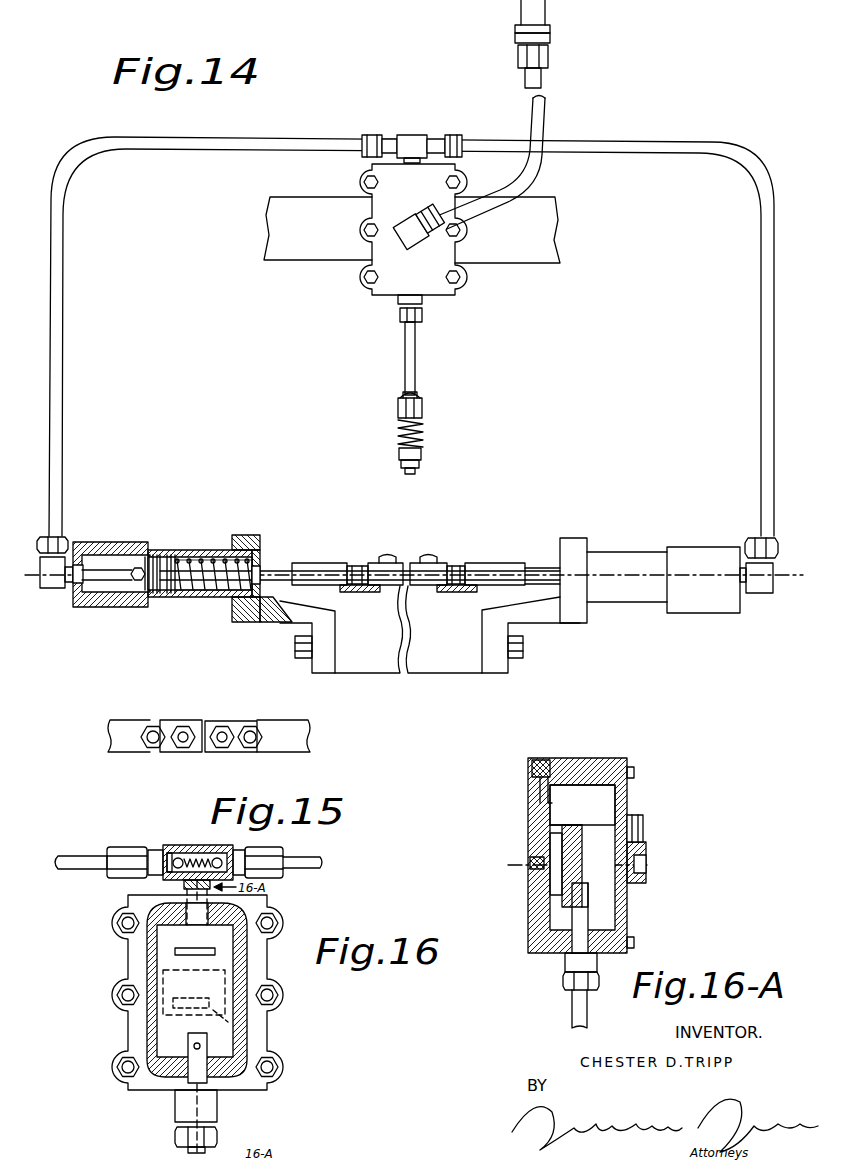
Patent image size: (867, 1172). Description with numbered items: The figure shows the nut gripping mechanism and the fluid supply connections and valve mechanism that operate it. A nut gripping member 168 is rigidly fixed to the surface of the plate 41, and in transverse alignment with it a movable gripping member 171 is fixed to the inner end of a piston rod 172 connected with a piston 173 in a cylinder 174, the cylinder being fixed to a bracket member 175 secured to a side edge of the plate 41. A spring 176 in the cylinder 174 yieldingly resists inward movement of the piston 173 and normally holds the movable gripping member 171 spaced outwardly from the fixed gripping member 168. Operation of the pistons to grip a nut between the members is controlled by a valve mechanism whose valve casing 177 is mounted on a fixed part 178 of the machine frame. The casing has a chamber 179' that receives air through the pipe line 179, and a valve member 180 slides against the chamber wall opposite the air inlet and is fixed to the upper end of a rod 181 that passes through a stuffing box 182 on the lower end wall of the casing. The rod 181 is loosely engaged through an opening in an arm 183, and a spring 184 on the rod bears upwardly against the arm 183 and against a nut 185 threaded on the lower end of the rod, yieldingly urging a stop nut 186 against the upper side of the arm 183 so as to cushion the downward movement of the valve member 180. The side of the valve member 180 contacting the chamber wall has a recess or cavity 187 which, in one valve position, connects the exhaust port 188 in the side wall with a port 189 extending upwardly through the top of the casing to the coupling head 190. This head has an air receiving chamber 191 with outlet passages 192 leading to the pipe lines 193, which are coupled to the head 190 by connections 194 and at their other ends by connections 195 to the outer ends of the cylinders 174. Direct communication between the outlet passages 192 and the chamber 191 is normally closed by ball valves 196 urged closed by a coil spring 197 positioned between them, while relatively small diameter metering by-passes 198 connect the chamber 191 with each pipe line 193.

In FIG. 14, the plate 41 is at (362, 660).
In FIG. 14, the nut gripping member 168 is at (392, 570).
In FIG. 14, the movable gripping member 171 is at (313, 565).
In FIG. 14, the piston rod 172 is at (282, 578).
In FIG. 14, the piston 173 is at (172, 570).
In FIG. 14, the cylinder 174 is at (216, 555).
In FIG. 14, the bracket member 175 is at (256, 622).
In FIG. 14, the spring 176 is at (192, 600).
In FIG. 14, the valve casing 177 is at (464, 278).
In FIG. 16, the valve casing 177 is at (128, 1020).
In FIG. 16-A, the valve casing 177 is at (536, 928).
In FIG. 14, the fixed part of the machine frame 178 is at (522, 222).
In FIG. 14, the pipe line 179 is at (503, 125).
In FIG. 16, the pipe line 179 is at (230, 976).
In FIG. 16-A, the pipe line 179 is at (663, 849).
In FIG. 16-A, the chamber 179' is at (596, 765).
In FIG. 16, the valve member 180 is at (226, 940).
In FIG. 16-A, the valve member 180 is at (586, 842).
In FIG. 14, the rod 181 is at (418, 352).
In FIG. 16, the rod 181 is at (202, 1062).
In FIG. 16-A, the rod 181 is at (572, 1025).
In FIG. 14, the stuffing box 182 is at (400, 310).
In FIG. 16, the stuffing box 182 is at (176, 1108).
In FIG. 16-A, the stuffing box 182 is at (562, 968).
In FIG. 14, the arm 183 is at (425, 412).
In FIG. 14, the spring 184 is at (425, 432).
In FIG. 14, the nut 185 is at (405, 472).
In FIG. 14, the stop nut 186 is at (404, 405).
In FIG. 16-A, the recess or cavity 187 is at (556, 845).
In FIG. 16, the exhaust port 188 is at (230, 1027).
In FIG. 16-A, the exhaust port 188 is at (532, 868).
In FIG. 16, the port 189 is at (176, 951).
In FIG. 16-A, the port 189 is at (540, 798).
In FIG. 14, the coupling head 190 is at (412, 136).
In FIG. 15, the coupling head 190 is at (165, 852).
In FIG. 15, the air receiving chamber 191 is at (186, 884).
In FIG. 15, the outlet passage 192 is at (176, 848).
In FIG. 14, the pipe line 193 is at (52, 372).
In FIG. 15, the pipe line 193 is at (70, 856).
In FIG. 15, the connection 194 is at (132, 847).
In FIG. 14, the connection 195 is at (764, 560).
In FIG. 15, the ball valve 196 is at (226, 856).
In FIG. 15, the coil spring 197 is at (186, 856).
In FIG. 15, the metering by-pass 198 is at (168, 875).